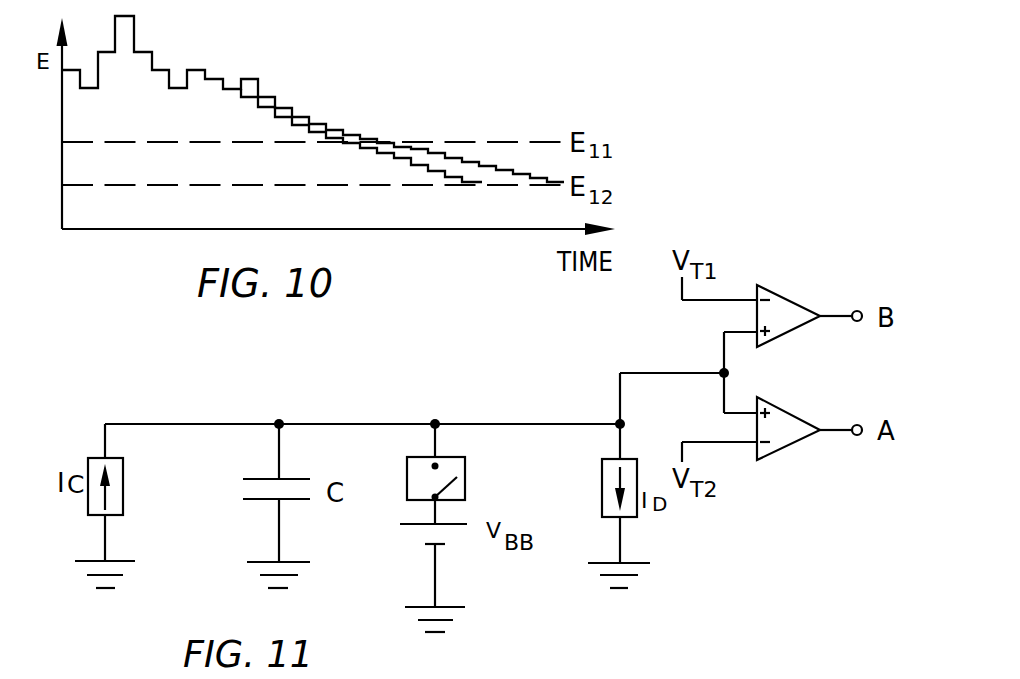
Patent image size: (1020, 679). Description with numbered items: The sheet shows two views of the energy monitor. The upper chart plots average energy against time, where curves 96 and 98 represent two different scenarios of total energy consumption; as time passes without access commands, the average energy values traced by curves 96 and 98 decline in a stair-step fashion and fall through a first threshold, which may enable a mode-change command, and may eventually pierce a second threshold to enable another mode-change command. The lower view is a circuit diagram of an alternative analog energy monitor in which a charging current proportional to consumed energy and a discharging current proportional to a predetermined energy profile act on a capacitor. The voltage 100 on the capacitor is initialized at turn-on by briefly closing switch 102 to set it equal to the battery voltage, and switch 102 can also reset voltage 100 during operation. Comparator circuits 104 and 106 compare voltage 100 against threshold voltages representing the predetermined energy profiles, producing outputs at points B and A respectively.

In FIG. 10, the curve 96 is at (280, 97).
In FIG. 10, the curve 98 is at (251, 97).
In FIG. 11, the voltage 100 is at (322, 423).
In FIG. 11, the switch 102 is at (466, 472).
In FIG. 11, the comparator circuit 104 is at (784, 295).
In FIG. 11, the comparator circuit 106 is at (784, 408).